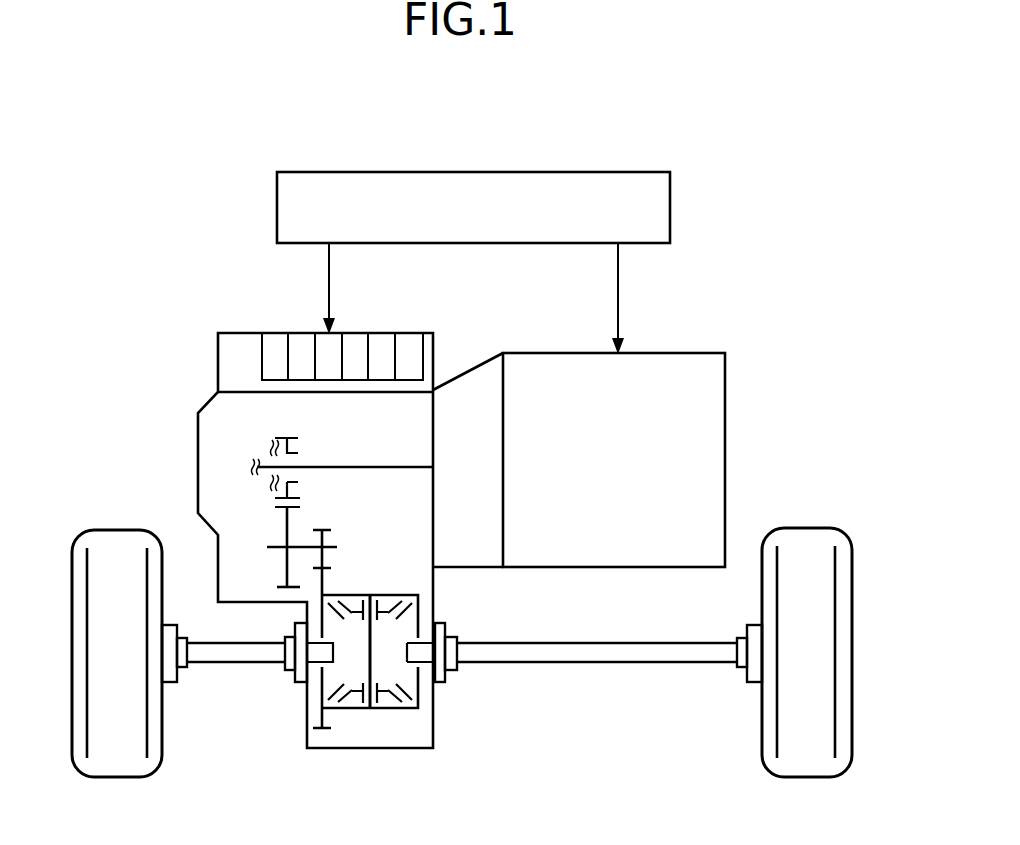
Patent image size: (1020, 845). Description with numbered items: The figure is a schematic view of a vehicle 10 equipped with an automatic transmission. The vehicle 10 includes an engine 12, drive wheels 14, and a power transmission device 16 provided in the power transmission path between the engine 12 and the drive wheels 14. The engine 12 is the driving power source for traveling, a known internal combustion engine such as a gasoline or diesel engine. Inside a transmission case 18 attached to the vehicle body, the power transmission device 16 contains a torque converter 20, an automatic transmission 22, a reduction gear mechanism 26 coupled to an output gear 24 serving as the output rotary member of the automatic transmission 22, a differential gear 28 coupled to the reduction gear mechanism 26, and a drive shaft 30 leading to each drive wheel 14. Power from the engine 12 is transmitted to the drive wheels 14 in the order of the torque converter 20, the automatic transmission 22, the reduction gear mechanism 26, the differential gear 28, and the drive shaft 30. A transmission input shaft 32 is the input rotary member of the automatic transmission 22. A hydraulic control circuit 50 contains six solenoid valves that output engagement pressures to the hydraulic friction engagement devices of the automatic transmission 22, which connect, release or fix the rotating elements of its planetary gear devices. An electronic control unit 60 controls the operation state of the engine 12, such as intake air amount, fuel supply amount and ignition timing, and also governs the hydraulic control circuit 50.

The vehicle 10 is at (683, 132).
The engine 12 is at (675, 362).
The drive wheel 14 is at (118, 546).
The power transmission device 16 is at (170, 331).
The transmission case 18 is at (209, 398).
The torque converter 20 is at (466, 385).
The automatic transmission 22 is at (205, 461).
The output gear 24 is at (286, 437).
The reduction gear mechanism 26 is at (346, 534).
The differential gear 28 is at (380, 741).
The drive shaft 30 is at (232, 655).
The transmission input shaft 32 is at (383, 467).
The hydraulic control circuit 50 is at (239, 348).
The electronic control unit 60 is at (348, 172).